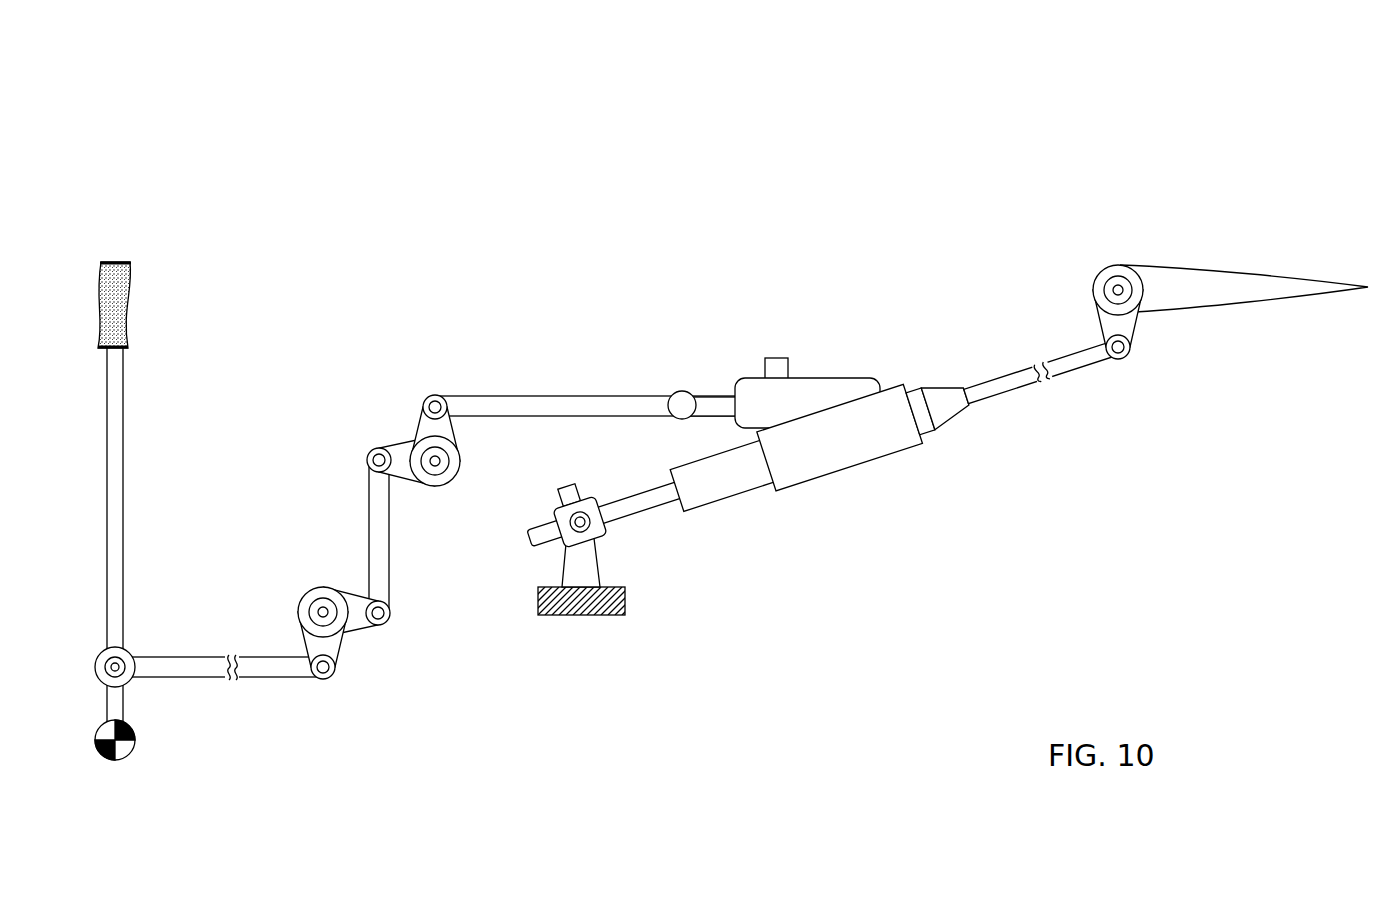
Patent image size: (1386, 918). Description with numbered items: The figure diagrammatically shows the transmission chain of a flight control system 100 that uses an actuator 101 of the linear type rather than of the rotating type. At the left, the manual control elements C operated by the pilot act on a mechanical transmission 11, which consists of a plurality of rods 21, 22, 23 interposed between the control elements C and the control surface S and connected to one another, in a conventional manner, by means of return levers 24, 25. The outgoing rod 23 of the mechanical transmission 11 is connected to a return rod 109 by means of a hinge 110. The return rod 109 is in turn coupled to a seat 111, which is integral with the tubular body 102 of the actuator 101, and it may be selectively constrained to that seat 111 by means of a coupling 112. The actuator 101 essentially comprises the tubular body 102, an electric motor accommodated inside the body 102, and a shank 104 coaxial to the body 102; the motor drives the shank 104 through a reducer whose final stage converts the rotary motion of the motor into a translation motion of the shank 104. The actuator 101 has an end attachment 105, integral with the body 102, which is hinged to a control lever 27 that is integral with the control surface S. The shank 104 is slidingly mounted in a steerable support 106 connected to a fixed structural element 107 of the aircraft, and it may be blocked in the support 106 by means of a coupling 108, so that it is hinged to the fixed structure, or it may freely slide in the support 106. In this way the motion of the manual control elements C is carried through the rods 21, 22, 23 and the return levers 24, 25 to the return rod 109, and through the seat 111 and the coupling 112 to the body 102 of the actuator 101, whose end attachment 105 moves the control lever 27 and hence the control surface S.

The manual control elements C is at (142, 431).
The control surface S is at (1227, 265).
The mechanical transmission 11 is at (425, 522).
The rod 21 is at (185, 660).
The rod 22 is at (370, 532).
The outgoing rod 23 is at (625, 397).
The return lever 24 is at (350, 637).
The return lever 25 is at (398, 431).
The control lever 27 is at (1122, 322).
The flight control system 100 is at (789, 438).
The actuator 101 is at (830, 493).
The tubular body 102 is at (893, 440).
The shank 104 is at (630, 515).
The end attachment 105 is at (1078, 360).
The steerable support 106 is at (555, 555).
The fixed structural element 107 is at (608, 597).
The coupling 108 is at (567, 490).
The return rod 109 is at (720, 397).
The hinge 110 is at (683, 391).
The seat 111 is at (847, 392).
The coupling 112 is at (777, 367).